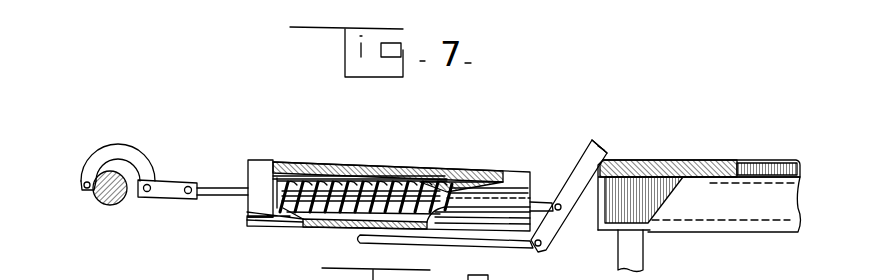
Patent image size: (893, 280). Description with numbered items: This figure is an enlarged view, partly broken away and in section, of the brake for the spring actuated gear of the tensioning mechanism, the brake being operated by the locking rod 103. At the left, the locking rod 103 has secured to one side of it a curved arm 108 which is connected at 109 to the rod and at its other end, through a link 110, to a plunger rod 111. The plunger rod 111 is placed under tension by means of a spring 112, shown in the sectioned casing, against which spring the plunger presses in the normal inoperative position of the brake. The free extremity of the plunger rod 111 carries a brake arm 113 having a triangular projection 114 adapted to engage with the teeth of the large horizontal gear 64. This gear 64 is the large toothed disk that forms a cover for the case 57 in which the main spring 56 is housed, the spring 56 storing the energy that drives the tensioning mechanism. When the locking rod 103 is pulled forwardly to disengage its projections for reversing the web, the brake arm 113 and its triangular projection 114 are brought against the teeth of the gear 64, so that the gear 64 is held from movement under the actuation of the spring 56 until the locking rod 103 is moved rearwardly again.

The main spring 56 is at (612, 222).
The case 57 is at (724, 204).
The disk 64 is at (690, 163).
The locking rod 103 is at (115, 203).
The curved arm 108 is at (115, 152).
The connection 109 is at (86, 190).
The link 110 is at (162, 188).
The plunger rod 111 is at (544, 251).
The spring 112 is at (415, 178).
The brake arm 113 is at (583, 163).
The triangular projection 114 is at (604, 154).